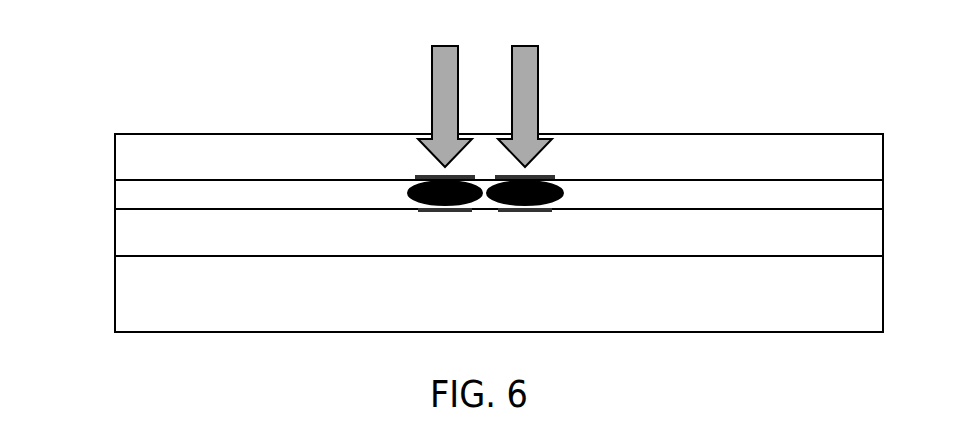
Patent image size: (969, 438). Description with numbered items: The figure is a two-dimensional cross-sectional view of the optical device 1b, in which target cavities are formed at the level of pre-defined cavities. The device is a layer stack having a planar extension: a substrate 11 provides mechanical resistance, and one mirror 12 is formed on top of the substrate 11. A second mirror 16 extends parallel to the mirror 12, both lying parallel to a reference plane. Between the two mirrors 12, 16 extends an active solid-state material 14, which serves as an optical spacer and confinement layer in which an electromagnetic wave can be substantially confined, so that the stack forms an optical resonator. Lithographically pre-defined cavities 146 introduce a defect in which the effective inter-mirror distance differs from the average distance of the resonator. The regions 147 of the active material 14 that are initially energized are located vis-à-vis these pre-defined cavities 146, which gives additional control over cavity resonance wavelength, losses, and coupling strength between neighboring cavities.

The semiconductor wafer / device 1b is at (464, 276).
The substrate 11 is at (130, 296).
The mirror 12 is at (128, 229).
The active material 14 is at (118, 193).
The mirror 16 is at (128, 148).
The pre-defined cavities 146 is at (428, 168).
The regions 147 is at (410, 205).